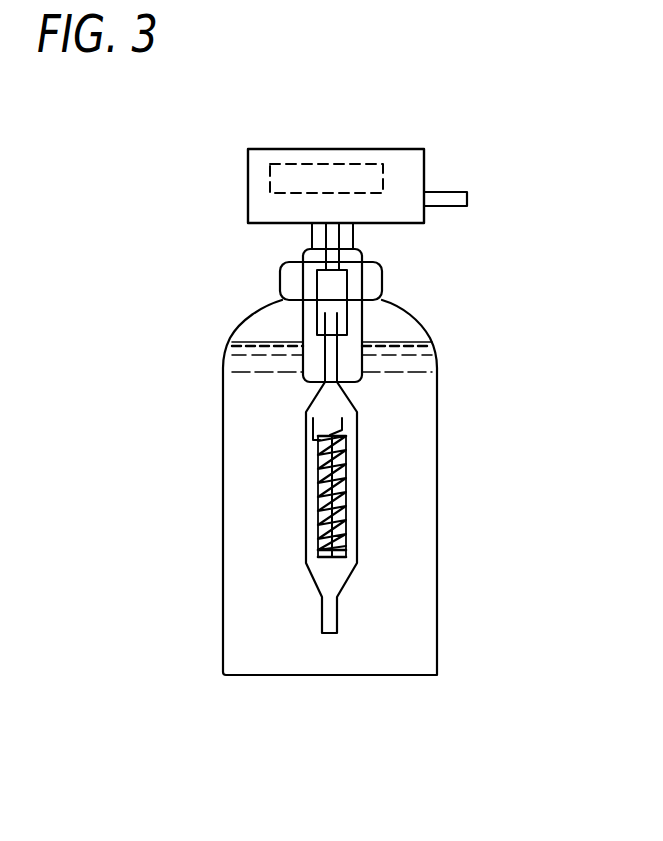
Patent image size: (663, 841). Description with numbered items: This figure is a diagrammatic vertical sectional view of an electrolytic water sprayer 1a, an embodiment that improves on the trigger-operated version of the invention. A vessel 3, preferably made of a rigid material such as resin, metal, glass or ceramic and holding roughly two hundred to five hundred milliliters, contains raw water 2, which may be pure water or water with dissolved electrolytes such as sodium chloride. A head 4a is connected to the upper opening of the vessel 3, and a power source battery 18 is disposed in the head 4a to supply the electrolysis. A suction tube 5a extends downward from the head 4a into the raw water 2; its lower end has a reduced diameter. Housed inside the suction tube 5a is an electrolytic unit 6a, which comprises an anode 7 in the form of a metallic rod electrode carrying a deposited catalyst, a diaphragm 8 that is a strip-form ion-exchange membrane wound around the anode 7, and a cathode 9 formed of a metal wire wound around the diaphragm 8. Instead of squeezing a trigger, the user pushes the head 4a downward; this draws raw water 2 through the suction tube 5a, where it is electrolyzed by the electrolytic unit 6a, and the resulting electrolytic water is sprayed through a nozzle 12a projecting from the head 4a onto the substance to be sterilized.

The electrolytic water sprayer 1a is at (467, 393).
The raw water 2 is at (413, 617).
The vessel 3 is at (437, 535).
The head 4a is at (317, 149).
The suction tube 5a is at (303, 543).
The electrolytic unit 6a is at (303, 498).
The anode 7 is at (343, 520).
The diaphragm 8 is at (345, 497).
The cathode 9 is at (340, 472).
The nozzle 12a is at (444, 198).
The power source battery 18 is at (360, 165).